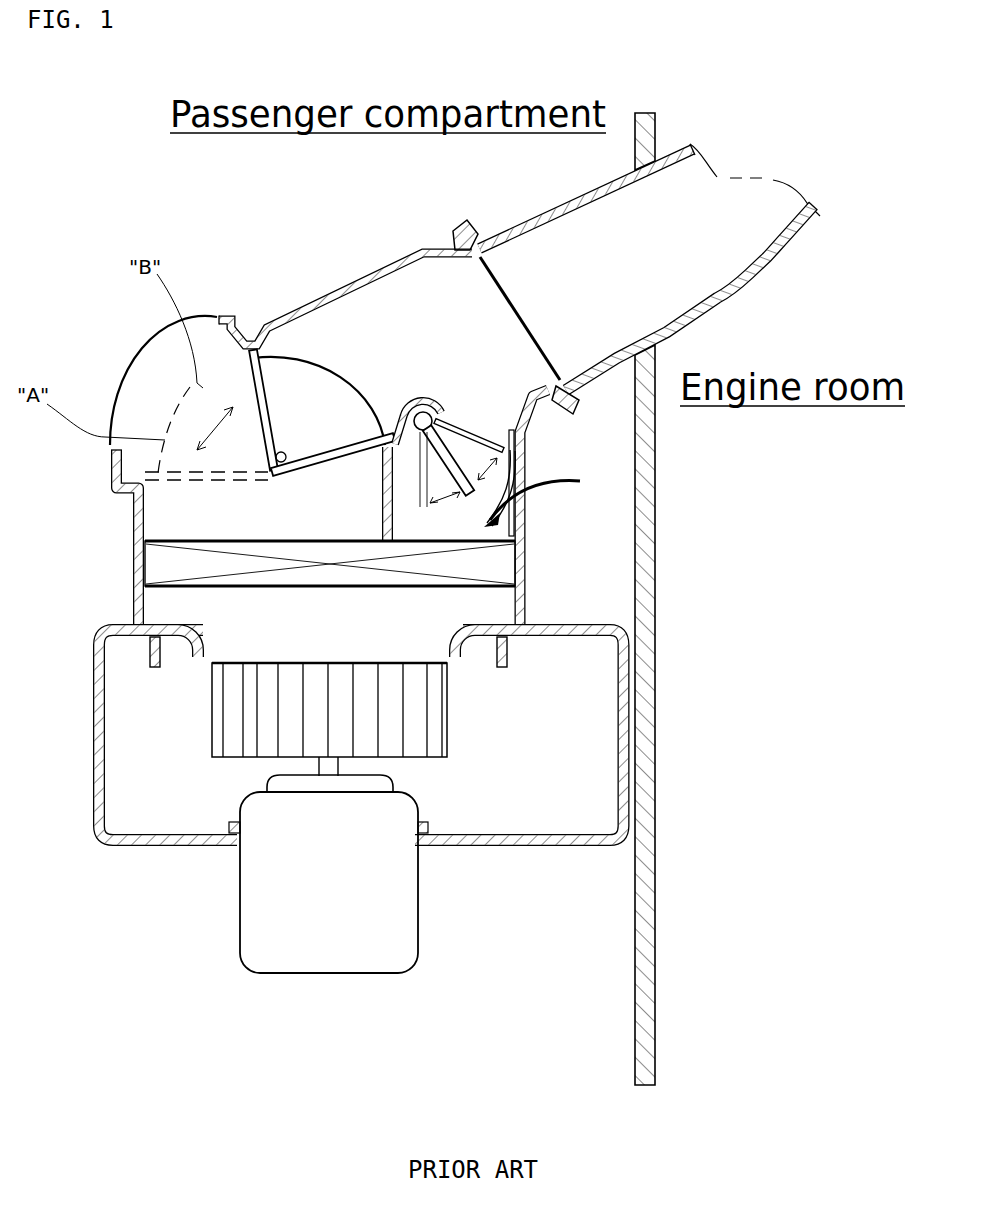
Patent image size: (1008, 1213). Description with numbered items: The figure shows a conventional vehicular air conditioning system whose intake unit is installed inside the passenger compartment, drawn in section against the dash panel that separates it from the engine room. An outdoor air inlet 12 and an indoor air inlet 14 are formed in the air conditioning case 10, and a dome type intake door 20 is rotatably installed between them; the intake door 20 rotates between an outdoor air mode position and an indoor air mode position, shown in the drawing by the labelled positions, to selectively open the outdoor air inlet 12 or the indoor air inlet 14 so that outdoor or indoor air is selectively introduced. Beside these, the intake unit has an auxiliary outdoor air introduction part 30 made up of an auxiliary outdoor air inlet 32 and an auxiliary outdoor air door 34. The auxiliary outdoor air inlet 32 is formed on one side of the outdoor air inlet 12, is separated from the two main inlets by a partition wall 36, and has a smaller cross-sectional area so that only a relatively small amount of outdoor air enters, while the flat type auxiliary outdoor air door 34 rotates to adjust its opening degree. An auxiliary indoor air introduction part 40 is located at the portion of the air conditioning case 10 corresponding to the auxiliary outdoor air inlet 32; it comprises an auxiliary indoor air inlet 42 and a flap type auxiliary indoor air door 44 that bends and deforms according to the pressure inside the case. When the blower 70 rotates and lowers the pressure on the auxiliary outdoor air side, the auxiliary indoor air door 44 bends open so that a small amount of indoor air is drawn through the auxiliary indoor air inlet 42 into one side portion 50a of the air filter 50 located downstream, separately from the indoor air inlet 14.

The air conditioning case 10 is at (380, 264).
The outdoor air inlet 12 is at (360, 345).
The indoor air inlet 14 is at (157, 390).
The intake door 20 is at (294, 351).
The auxiliary outdoor air introduction part 30 is at (489, 284).
The auxiliary outdoor air inlet 32 is at (475, 420).
The auxiliary outdoor air door 34 is at (459, 408).
The partition wall 36 is at (395, 492).
The auxiliary indoor air introduction part 40 is at (616, 483).
The auxiliary indoor air inlet 42 is at (540, 482).
The auxiliary indoor air door 44 is at (500, 522).
The air filter 50 is at (322, 572).
The one side portion of the air filter 50a is at (430, 531).
The blower 70 is at (447, 710).